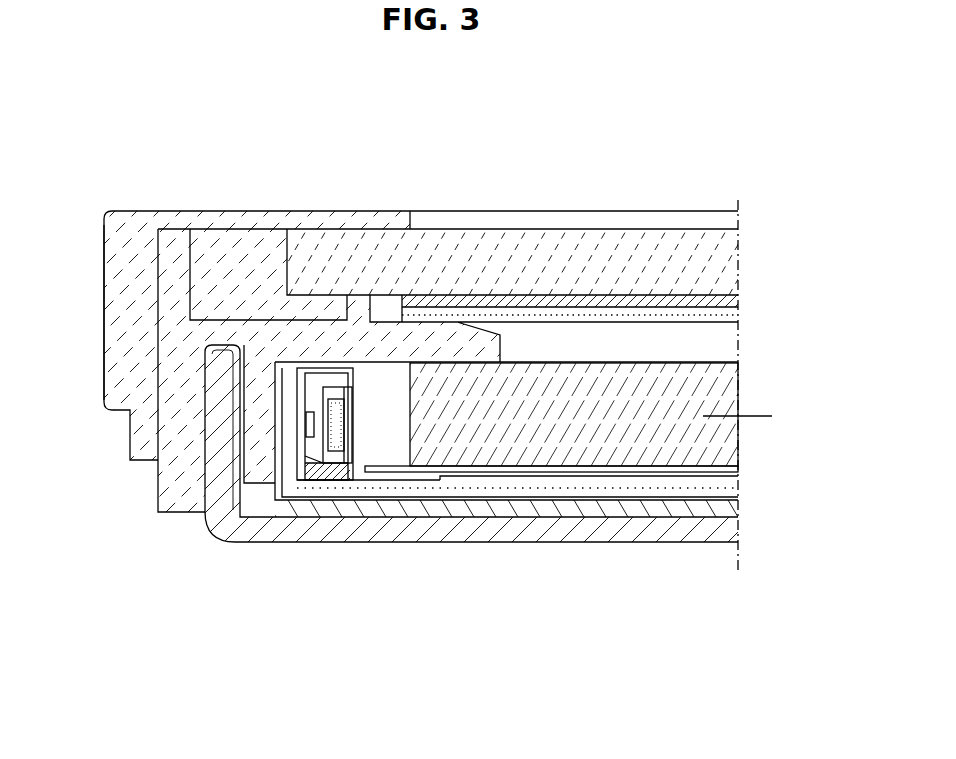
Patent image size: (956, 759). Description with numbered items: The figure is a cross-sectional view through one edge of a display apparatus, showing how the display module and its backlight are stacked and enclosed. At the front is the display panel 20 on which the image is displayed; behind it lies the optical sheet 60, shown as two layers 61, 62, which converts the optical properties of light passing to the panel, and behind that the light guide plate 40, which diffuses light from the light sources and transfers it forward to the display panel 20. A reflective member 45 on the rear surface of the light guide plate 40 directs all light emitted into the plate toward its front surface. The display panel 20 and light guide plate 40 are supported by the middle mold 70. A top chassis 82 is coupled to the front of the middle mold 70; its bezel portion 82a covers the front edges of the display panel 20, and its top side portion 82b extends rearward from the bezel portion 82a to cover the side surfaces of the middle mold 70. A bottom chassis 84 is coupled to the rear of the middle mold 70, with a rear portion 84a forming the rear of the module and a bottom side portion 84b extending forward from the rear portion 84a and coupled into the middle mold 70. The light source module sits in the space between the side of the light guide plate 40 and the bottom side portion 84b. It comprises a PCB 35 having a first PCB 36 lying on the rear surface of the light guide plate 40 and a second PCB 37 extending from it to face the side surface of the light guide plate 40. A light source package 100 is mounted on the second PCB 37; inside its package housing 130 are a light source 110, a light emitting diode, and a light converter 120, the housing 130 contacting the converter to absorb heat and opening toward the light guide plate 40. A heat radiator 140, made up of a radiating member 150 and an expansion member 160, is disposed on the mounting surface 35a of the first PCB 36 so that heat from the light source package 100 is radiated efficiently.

The display panel 20 is at (615, 247).
The printed circuit board 35 is at (485, 494).
The mounting surface 35a is at (315, 366).
The first PCB 36 is at (332, 505).
The second PCB 37 is at (262, 520).
The light guide plate 40 is at (725, 390).
The reflective member 45 is at (728, 467).
The optical sheet 60 is at (624, 303).
The adhesive layer 61 is at (602, 322).
The polarizing layer 62 is at (738, 300).
The middle mold 70 is at (172, 390).
The top chassis 82 is at (388, 293).
The bezel portion 82a is at (322, 211).
The top side portion 82b is at (104, 291).
The bottom chassis 84 is at (466, 477).
The rear portion 84a is at (657, 530).
The bottom side portion 84b is at (205, 477).
The light source package 100 is at (249, 376).
The light source 110 is at (306, 427).
The light converter 120 is at (349, 427).
The package housing 130 is at (333, 378).
The heat radiator 140 is at (517, 560).
The radiating member 150 is at (500, 488).
The expansion member 160 is at (432, 480).